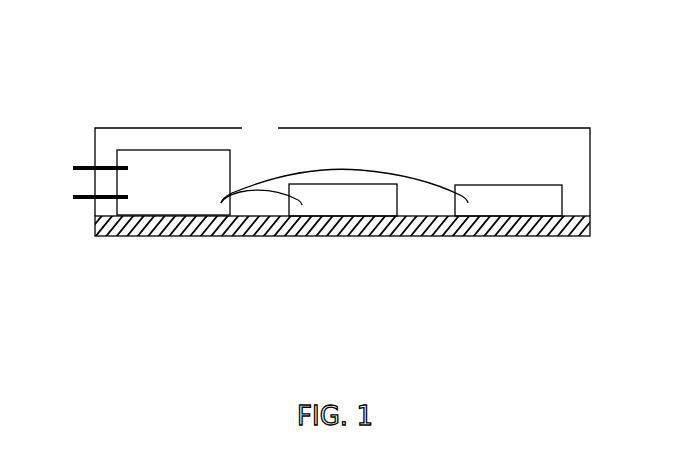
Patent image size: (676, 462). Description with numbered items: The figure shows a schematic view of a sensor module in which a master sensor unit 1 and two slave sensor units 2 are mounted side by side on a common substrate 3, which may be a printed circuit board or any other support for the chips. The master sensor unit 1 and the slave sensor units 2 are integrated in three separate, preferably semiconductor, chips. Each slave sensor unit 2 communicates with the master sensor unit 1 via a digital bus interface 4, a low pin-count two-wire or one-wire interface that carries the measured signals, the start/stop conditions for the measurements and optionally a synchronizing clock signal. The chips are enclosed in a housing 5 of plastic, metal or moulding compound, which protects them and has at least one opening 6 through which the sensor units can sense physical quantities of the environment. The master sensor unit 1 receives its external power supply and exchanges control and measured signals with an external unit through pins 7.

The master sensor unit 1 is at (173, 168).
The slave sensor units 2 is at (338, 200).
The common substrate 3 is at (165, 235).
The digital bus interface 4 is at (252, 193).
The housing 5 is at (470, 128).
The opening 6 is at (257, 129).
The pins 7 is at (80, 199).